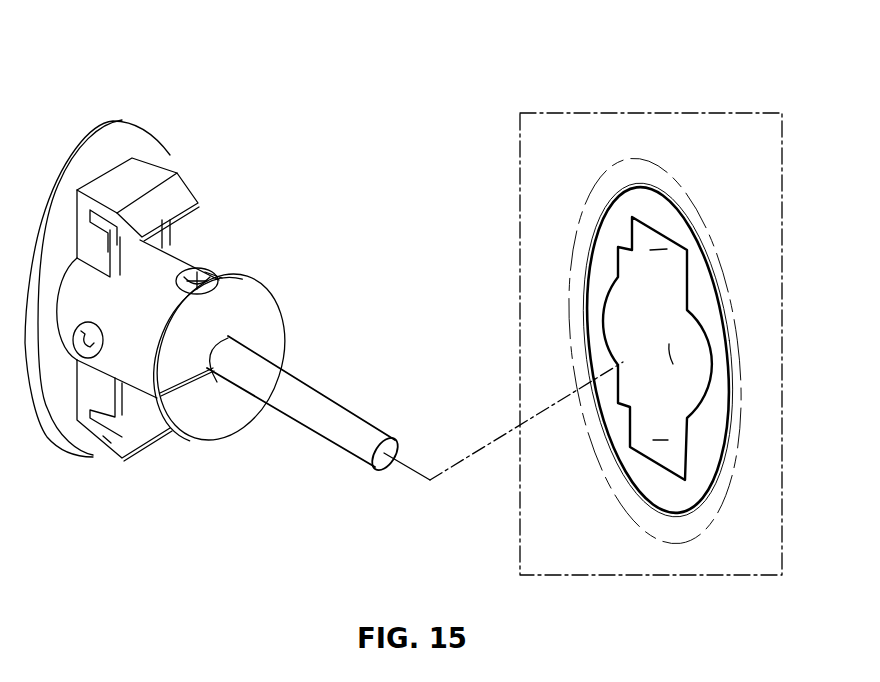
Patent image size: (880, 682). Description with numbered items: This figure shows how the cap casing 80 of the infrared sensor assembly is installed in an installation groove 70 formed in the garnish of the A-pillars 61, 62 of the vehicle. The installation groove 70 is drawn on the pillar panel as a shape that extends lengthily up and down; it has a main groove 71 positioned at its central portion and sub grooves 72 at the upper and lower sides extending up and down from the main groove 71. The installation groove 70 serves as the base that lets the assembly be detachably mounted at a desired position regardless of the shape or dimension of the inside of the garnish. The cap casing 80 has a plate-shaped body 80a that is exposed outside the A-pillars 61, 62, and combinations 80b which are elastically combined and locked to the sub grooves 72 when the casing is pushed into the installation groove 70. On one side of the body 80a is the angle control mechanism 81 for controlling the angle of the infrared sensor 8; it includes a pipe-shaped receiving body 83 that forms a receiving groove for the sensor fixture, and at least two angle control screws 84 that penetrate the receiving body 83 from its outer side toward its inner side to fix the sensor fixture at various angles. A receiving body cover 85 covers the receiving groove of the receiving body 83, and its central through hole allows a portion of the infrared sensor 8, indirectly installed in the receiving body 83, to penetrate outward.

The infrared sensor 8 is at (293, 403).
The A-pillar 61 is at (651, 293).
The A-pillar 62 is at (709, 157).
The installation groove 70 is at (590, 317).
The main groove 71 is at (672, 349).
The sub grooves 72 is at (655, 248).
The cap casing 80 is at (68, 465).
The body 80a is at (105, 150).
The combinations 80b is at (133, 187).
The angle control mechanism 81 is at (238, 200).
The receiving body 83 is at (221, 275).
The angle control screws 84 is at (199, 268).
The receiving body cover 85 is at (267, 323).